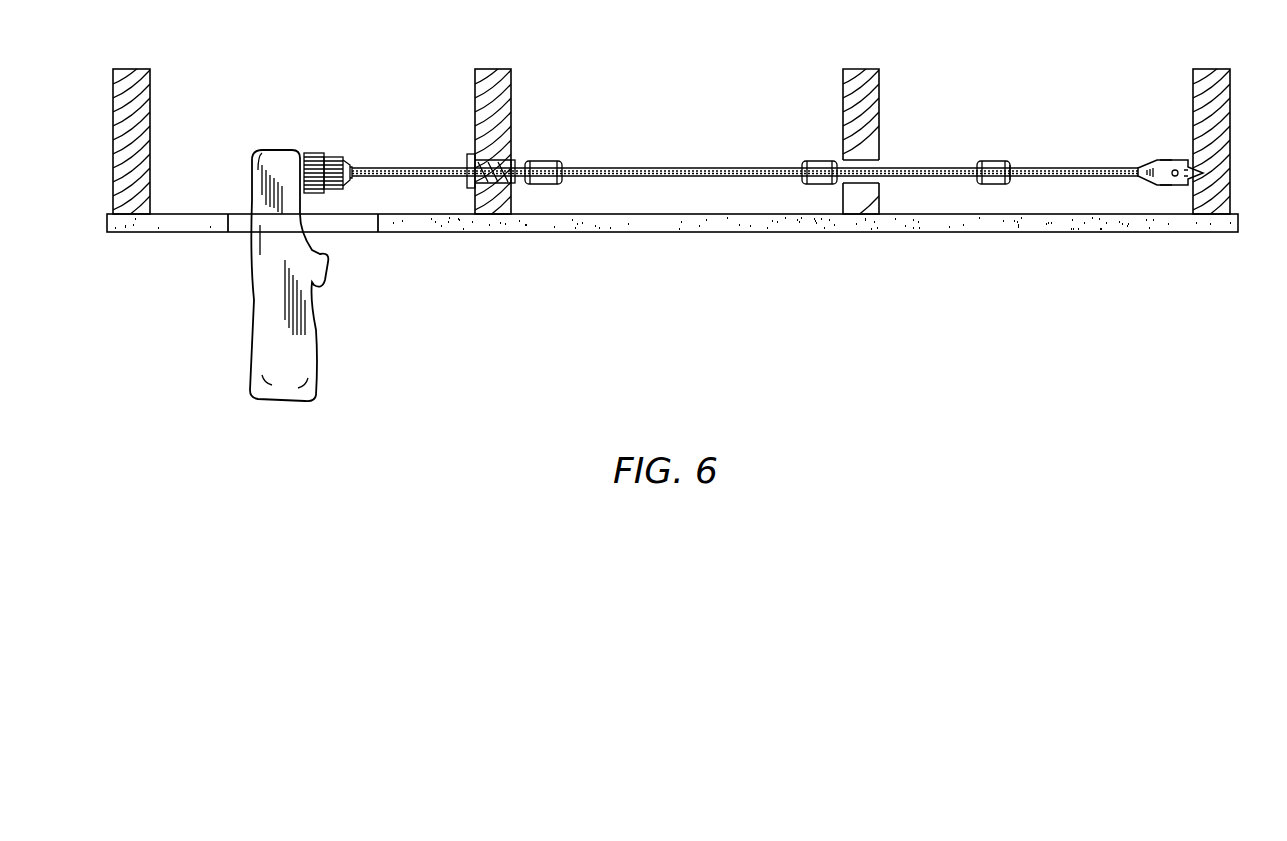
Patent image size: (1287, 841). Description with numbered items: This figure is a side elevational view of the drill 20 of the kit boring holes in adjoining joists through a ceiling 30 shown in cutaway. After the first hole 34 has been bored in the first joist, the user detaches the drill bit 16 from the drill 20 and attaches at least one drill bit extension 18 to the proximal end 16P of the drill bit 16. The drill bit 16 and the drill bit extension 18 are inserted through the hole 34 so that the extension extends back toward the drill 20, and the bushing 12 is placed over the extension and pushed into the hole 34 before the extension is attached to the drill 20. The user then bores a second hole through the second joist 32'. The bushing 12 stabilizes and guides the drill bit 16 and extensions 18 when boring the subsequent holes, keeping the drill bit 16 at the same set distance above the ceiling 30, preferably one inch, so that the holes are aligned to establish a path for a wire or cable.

The bushing 12 is at (467, 153).
The drill bit 16 is at (1160, 158).
The proximal end of the drill bit 16P is at (1014, 162).
The drill bit extension 18 is at (423, 168).
The drill 20 is at (281, 155).
The ceiling 30 is at (665, 233).
The second joist 32' is at (885, 129).
The hole in the first joist 34 is at (514, 156).